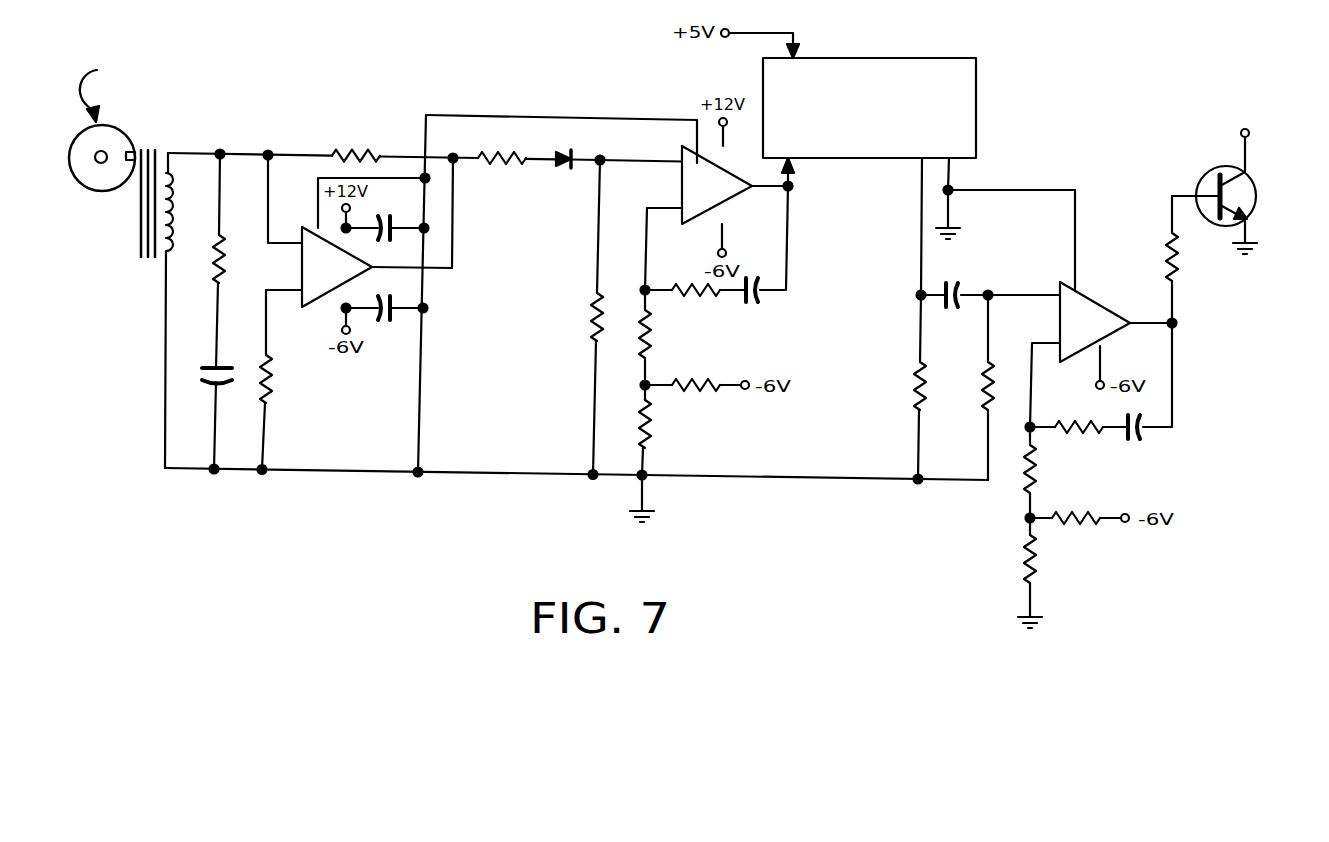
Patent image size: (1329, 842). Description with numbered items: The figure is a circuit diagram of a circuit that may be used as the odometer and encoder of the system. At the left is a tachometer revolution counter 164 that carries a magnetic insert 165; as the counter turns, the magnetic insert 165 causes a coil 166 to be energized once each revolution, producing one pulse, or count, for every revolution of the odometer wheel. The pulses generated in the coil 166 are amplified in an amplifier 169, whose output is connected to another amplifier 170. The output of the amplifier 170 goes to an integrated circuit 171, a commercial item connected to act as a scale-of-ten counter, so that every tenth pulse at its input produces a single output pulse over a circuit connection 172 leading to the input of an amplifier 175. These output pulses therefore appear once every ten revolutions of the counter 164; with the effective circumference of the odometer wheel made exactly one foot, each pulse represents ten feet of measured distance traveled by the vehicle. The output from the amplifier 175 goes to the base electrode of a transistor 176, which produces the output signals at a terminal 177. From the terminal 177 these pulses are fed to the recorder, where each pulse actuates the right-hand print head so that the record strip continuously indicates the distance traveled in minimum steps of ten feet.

The tachometer revolution counter 164 is at (100, 184).
The magnetic insert 165 is at (133, 150).
The coil 166 is at (173, 225).
The amplifier 169 is at (312, 265).
The amplifier 170 is at (690, 183).
The integrated circuit 171 is at (976, 119).
The circuit connection 172 is at (921, 292).
The amplifier 175 is at (1098, 303).
The transistor 176 is at (1250, 205).
The terminal 177 is at (1241, 132).